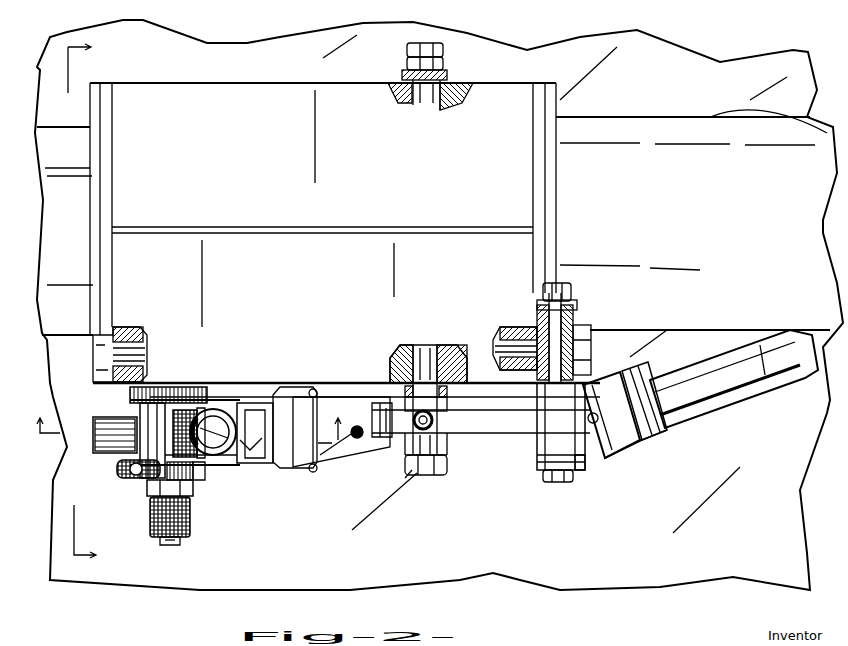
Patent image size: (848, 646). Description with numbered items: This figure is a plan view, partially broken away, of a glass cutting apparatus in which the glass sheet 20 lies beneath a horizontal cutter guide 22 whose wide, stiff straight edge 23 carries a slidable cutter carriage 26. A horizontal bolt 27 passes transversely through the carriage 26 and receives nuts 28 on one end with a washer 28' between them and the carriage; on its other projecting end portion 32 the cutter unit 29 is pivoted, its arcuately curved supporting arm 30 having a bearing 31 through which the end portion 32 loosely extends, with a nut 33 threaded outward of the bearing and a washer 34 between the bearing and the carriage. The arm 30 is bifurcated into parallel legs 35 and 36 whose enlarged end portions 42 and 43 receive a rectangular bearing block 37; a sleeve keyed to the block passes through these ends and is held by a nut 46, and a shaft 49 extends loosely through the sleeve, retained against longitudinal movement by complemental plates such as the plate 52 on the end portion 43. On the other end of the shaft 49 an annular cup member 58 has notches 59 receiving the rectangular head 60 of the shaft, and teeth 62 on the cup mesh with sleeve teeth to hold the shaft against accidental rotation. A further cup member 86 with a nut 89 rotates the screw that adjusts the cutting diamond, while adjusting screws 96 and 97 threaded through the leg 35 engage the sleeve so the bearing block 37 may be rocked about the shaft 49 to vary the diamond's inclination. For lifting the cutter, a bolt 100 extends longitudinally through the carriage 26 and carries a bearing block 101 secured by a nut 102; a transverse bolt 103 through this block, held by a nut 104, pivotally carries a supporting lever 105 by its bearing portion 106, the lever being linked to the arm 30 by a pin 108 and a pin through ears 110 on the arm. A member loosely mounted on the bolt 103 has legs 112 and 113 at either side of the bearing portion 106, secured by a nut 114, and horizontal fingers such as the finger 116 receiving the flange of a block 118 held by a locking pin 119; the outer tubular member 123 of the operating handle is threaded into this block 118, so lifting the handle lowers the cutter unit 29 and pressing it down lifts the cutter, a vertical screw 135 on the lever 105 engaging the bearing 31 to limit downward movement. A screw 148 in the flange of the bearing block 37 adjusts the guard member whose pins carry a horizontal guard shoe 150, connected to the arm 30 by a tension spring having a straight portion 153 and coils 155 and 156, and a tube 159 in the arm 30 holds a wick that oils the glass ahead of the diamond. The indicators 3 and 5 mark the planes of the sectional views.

The glass sheet 20 is at (667, 60).
The cutter guide 22 is at (712, 112).
The straight edge 23 is at (773, 130).
The cutter carriage 26 is at (200, 70).
The horizontal bolt 27 is at (435, 345).
The nuts 28 is at (438, 56).
The washer 28' is at (415, 80).
The cutter unit 29 is at (286, 390).
The supporting arm 30 is at (333, 395).
The bearing 31 is at (448, 445).
The projecting end portion 32 is at (448, 398).
The nut 33 is at (420, 468).
The washer 34 is at (405, 342).
The leg 35 is at (210, 465).
The leg 36 is at (225, 410).
The bearing block 37 is at (180, 388).
The enlarged end portion 42 is at (190, 468).
The enlarged end portion 43 is at (155, 388).
The nut 46 is at (195, 480).
The shaft 49 is at (258, 405).
The plate 52 is at (190, 410).
The cup member 58 is at (150, 527).
The notches 59 is at (168, 537).
The head 60 is at (172, 538).
The teeth 62 is at (148, 496).
The cup member 86 is at (205, 410).
The nut 89 is at (235, 462).
The adjusting screw 96 is at (135, 474).
The adjusting screw 97 is at (117, 469).
The horizontal bolt 100 is at (497, 352).
The bearing block 101 is at (583, 320).
The nut 102 is at (590, 329).
The horizontal bolt 103 is at (540, 313).
The nut 104 is at (572, 296).
The supporting lever 105 is at (485, 433).
The bearing portion 106 is at (540, 462).
The pin 108 is at (405, 462).
The ears 110 is at (393, 395).
The leg 112 is at (580, 472).
The leg 113 is at (537, 392).
The nut 114 is at (553, 482).
The finger 116 is at (595, 380).
The block 118 is at (648, 366).
The locking pin 119 is at (622, 447).
The outer tubular member 123 is at (750, 400).
The screw 135 is at (437, 425).
The screw 148 is at (252, 458).
The guard shoe 150 is at (115, 408).
The straight portion 153 is at (334, 432).
The coil 155 is at (313, 389).
The coil 156 is at (313, 472).
The tube 159 is at (357, 438).
The section line 3 is at (189, 438).
The section line 5 is at (81, 298).